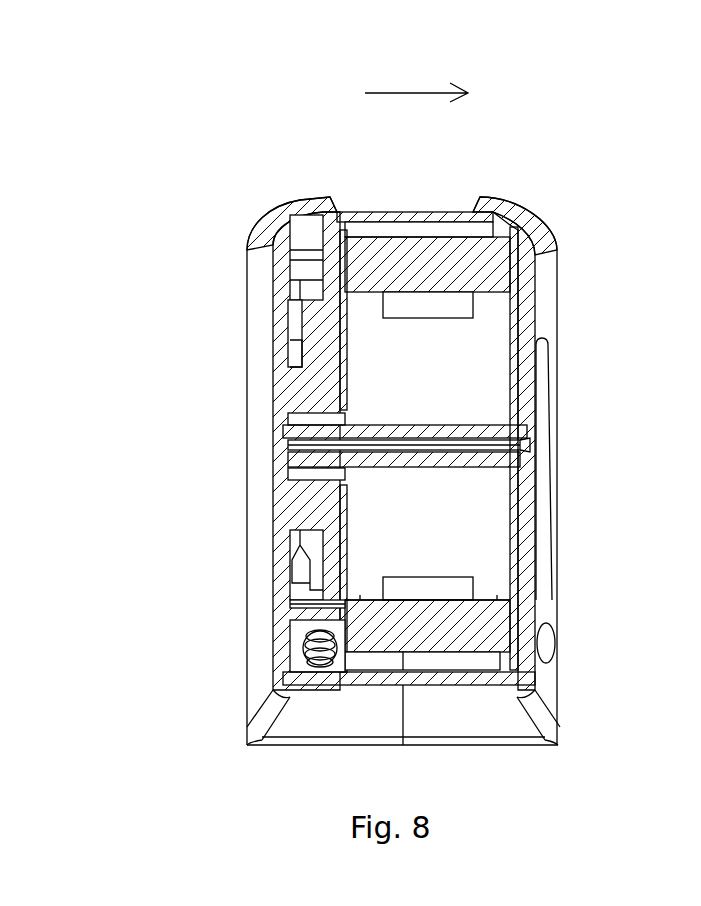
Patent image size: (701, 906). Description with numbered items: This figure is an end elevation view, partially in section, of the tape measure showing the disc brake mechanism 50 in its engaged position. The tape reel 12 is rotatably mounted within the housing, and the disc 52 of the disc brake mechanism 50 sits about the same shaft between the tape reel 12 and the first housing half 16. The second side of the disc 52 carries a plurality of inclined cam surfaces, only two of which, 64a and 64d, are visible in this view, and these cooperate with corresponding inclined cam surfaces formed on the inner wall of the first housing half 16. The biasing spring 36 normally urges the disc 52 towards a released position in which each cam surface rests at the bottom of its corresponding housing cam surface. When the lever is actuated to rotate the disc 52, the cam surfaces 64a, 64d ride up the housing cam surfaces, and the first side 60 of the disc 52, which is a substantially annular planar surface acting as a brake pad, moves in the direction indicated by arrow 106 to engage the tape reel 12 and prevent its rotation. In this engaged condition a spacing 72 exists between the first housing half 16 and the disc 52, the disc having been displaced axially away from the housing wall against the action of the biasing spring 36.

The arrow 106 is at (412, 92).
The first side of the disc 60 is at (378, 212).
The first housing half 16 is at (260, 318).
The disc 52 is at (300, 325).
The spacing 72 is at (290, 365).
The inclined cam surface 64d is at (290, 383).
The tape reel 12 is at (347, 360).
The inclined cam surface 64a is at (300, 562).
The disc brake mechanism 50 is at (300, 603).
The biasing spring 36 is at (300, 668).